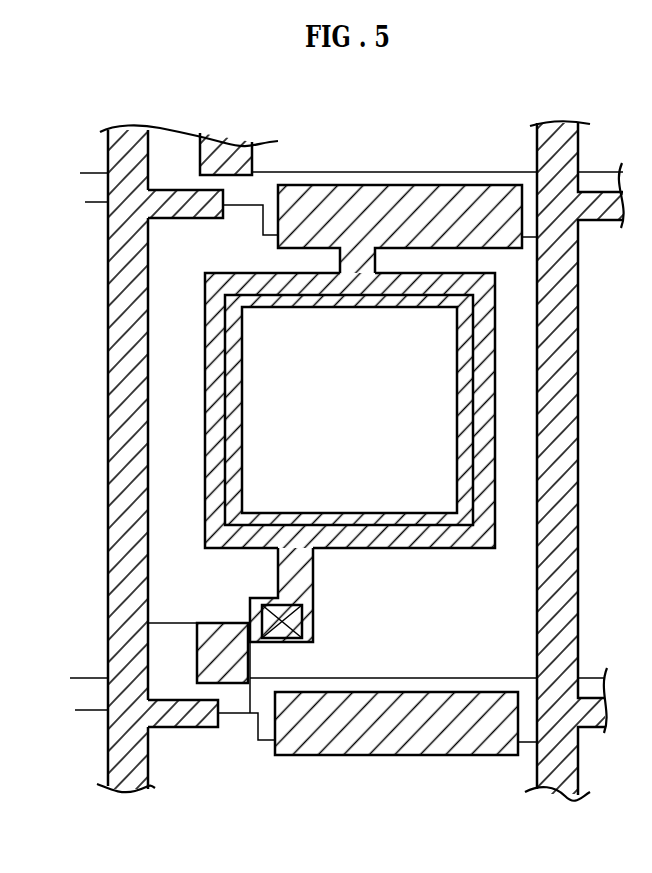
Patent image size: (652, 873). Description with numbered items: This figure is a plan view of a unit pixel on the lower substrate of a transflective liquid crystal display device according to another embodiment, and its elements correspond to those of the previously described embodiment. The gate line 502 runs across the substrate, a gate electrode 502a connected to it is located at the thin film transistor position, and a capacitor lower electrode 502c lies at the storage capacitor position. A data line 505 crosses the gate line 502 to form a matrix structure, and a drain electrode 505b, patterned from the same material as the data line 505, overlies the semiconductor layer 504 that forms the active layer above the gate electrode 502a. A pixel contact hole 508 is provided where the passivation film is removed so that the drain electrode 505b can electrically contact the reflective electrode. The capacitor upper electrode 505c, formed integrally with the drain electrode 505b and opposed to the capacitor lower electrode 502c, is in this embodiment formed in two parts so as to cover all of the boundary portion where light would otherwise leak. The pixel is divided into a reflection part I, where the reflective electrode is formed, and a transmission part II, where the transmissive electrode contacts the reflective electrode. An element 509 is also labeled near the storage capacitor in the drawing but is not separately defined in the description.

The gate line 502 is at (83, 163).
The gate electrode 502a is at (177, 727).
The gate connection portion 502c is at (267, 740).
The active layer 504 is at (170, 640).
The data line 505 is at (130, 417).
The source electrode 505b is at (313, 578).
The drain electrode 505c is at (458, 757).
The pixel contact hole 508 is at (310, 634).
The pixel electrode 509 is at (427, 700).
The reflection part I is at (520, 358).
The transmission part II is at (472, 417).